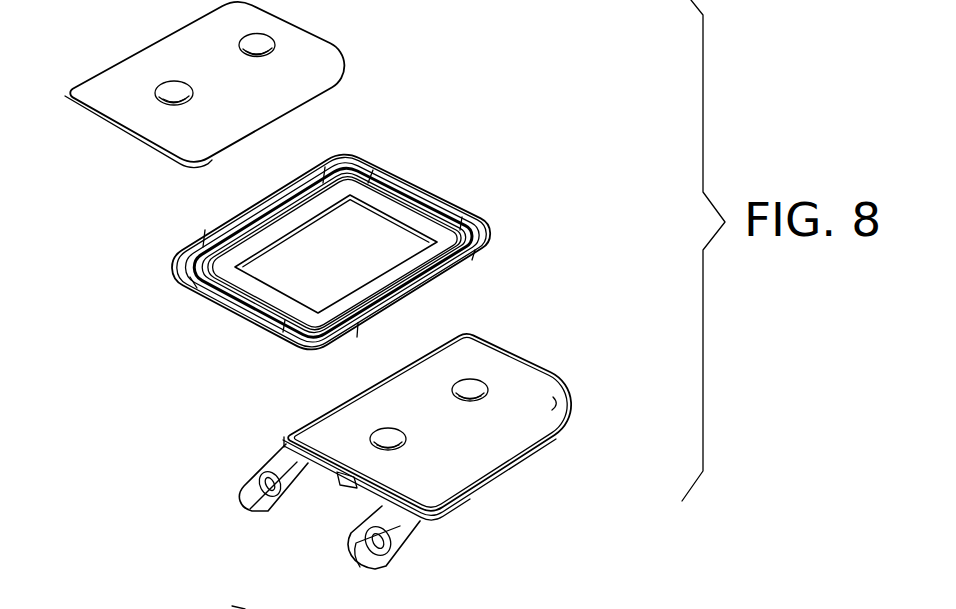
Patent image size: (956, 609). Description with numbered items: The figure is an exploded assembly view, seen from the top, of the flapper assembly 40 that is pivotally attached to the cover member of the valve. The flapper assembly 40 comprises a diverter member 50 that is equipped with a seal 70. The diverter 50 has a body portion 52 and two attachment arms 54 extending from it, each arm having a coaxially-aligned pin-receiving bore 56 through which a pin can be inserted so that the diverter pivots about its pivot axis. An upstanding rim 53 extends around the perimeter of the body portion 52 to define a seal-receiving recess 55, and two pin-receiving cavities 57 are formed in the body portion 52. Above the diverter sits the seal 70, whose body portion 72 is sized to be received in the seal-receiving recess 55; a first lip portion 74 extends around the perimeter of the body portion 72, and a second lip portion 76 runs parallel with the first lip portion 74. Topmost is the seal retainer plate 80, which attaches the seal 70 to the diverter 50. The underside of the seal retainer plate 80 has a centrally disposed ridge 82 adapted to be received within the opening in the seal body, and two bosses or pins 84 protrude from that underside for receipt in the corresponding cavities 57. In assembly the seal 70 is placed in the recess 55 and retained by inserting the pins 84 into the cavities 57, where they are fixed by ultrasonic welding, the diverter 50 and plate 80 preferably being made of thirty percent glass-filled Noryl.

The flapper assembly 40 is at (218, 411).
The diverter member 50 is at (446, 454).
The body portion 52 is at (460, 450).
The upstanding rim 53 is at (507, 353).
The attachment arms 54 is at (247, 500).
The seal-receiving recess 55 is at (552, 410).
The pin-receiving bores 56 is at (281, 490).
The pin-receiving cavities 57 is at (370, 437).
The seal 70 is at (358, 236).
The body portion 72 is at (350, 188).
The first lip portion 74 is at (206, 231).
The second lip portion 76 is at (413, 310).
The seal retainer plate 80 is at (255, 84).
The centrally disposed ridge 82 is at (237, 608).
The pins 84 is at (173, 98).